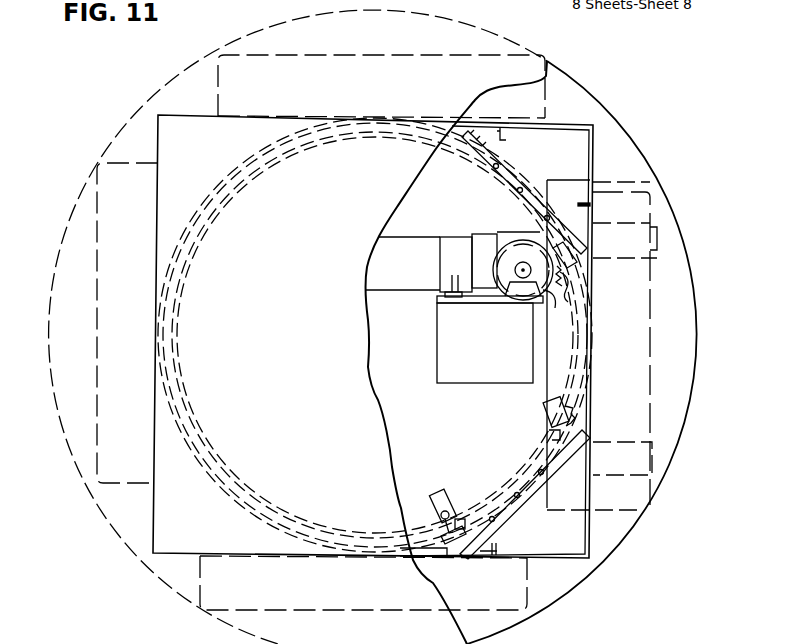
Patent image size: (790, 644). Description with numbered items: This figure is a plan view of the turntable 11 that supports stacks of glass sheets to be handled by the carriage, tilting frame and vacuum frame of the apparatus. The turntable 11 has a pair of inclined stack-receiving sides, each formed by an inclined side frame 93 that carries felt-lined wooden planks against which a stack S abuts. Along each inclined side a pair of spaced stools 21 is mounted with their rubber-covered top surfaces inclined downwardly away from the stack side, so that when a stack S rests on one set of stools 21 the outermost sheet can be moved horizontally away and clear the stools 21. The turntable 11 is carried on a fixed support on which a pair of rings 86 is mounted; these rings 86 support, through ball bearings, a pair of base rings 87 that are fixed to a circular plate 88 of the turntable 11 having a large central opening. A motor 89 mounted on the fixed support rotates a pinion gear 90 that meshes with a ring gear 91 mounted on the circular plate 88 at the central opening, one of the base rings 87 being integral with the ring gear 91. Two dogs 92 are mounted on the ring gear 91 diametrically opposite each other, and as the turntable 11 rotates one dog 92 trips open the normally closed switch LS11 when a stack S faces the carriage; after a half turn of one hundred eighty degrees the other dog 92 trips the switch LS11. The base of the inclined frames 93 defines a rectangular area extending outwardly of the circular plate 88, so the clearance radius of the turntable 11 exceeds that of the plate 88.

The turntable 11 is at (583, 125).
The stack S is at (612, 180).
The stools 21 is at (652, 460).
The circular plate 88 is at (690, 396).
The motor 89 is at (472, 236).
The pinion gear 90 is at (553, 302).
The ring gear 91 is at (570, 279).
The dogs 92 is at (548, 263).
The inclined side frames 93 is at (585, 203).
The rings 86 is at (550, 412).
The base rings 87 is at (572, 415).
The normally closed switch LS11 is at (434, 493).